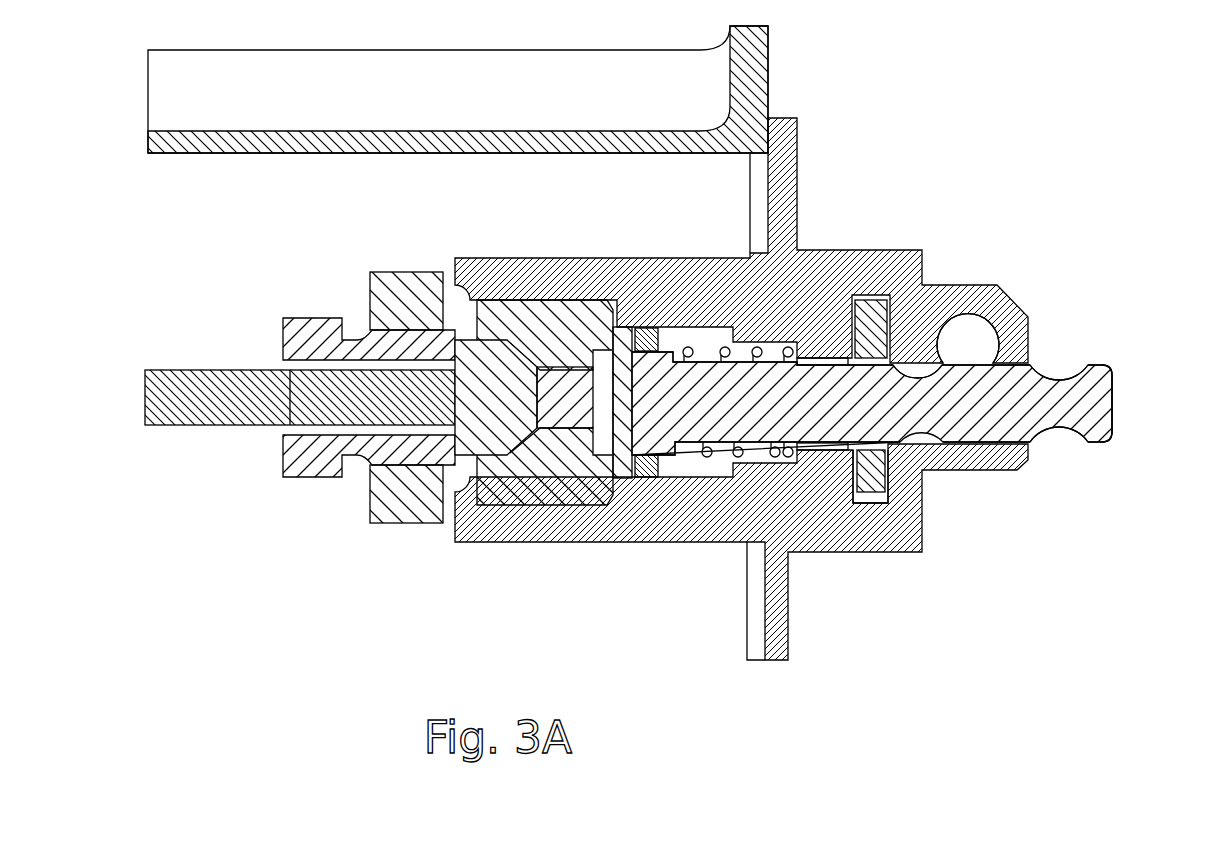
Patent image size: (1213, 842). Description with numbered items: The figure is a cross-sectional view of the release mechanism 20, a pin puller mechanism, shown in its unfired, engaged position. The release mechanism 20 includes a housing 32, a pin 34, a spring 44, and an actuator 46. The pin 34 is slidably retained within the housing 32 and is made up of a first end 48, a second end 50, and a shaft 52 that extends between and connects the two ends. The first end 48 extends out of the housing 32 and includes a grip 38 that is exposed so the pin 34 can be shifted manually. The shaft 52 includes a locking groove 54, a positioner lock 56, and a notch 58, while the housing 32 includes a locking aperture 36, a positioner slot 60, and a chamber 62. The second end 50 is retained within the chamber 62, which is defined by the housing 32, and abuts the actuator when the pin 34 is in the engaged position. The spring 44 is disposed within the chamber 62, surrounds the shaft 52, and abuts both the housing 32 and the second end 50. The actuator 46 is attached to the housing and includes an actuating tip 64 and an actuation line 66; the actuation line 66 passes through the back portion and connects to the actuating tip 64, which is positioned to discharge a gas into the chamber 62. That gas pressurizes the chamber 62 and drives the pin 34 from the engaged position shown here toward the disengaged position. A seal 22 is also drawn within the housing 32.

The release mechanism 20 is at (935, 177).
The seal 22 is at (857, 333).
The housing 32 is at (875, 268).
The pin 34 is at (1122, 405).
The locking aperture 36 is at (977, 337).
The grip 38 is at (1060, 380).
The spring 44 is at (707, 455).
The actuator 46 is at (352, 476).
The first end 48 is at (1095, 432).
The second end 50 is at (628, 393).
The shaft 52 is at (878, 405).
The locking groove 54 is at (922, 372).
The positioner lock 56 is at (855, 442).
The notch 58 is at (827, 362).
The positioner slot 60 is at (878, 513).
The chamber 62 is at (603, 393).
The actuating tip 64 is at (487, 393).
The actuation line 66 is at (221, 382).